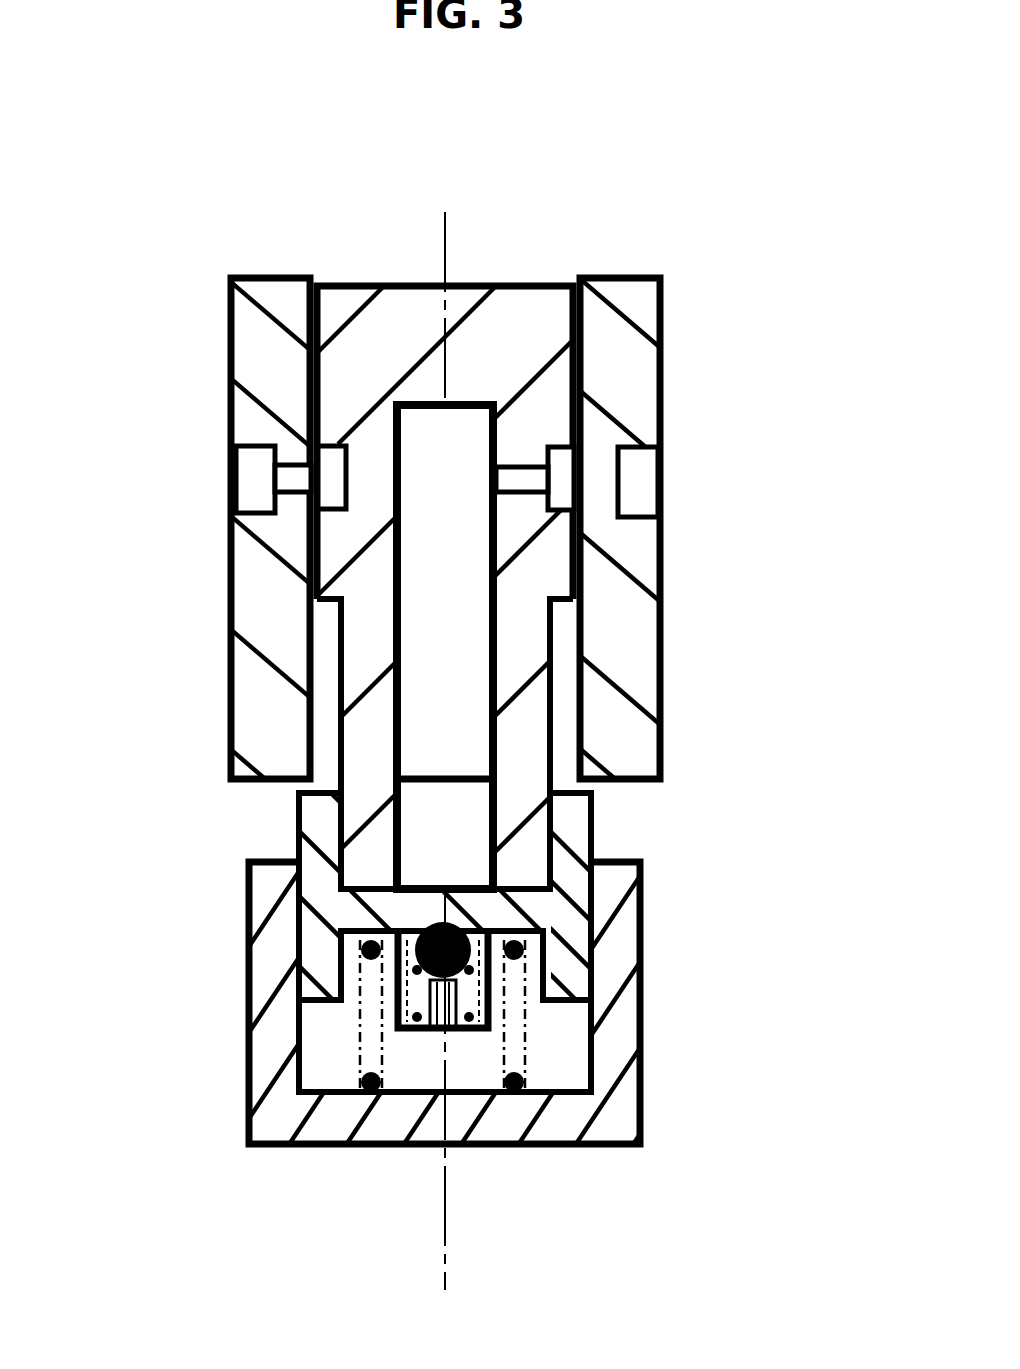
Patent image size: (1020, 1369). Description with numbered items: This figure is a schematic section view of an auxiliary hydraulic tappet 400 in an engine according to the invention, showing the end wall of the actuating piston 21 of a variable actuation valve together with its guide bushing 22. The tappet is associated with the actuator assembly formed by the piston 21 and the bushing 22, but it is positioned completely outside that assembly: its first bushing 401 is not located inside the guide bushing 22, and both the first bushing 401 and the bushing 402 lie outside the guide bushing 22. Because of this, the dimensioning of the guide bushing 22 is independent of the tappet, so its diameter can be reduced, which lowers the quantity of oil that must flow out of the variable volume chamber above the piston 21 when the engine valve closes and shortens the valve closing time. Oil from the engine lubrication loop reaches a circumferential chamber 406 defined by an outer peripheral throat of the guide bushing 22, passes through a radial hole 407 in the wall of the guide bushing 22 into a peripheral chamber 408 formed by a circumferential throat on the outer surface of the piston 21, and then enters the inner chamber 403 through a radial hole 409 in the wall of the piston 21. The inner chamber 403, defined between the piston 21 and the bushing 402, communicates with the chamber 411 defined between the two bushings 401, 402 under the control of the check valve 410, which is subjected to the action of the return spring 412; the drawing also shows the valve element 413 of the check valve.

The auxiliary hydraulic tappet 400 is at (166, 290).
The actuating piston 21 is at (537, 322).
The guide bushing 22 is at (640, 374).
The first bushing 401 is at (620, 950).
The bushing 402 is at (303, 823).
The inner chamber 403 is at (472, 641).
The circumferential chamber 406 is at (645, 487).
The radial hole 407 is at (290, 490).
The peripheral chamber 408 is at (327, 470).
The radial hole 409 is at (517, 470).
The check valve 410 is at (423, 977).
The chamber 411 is at (320, 1060).
The return spring 412 is at (513, 1058).
The ball 413 is at (445, 920).